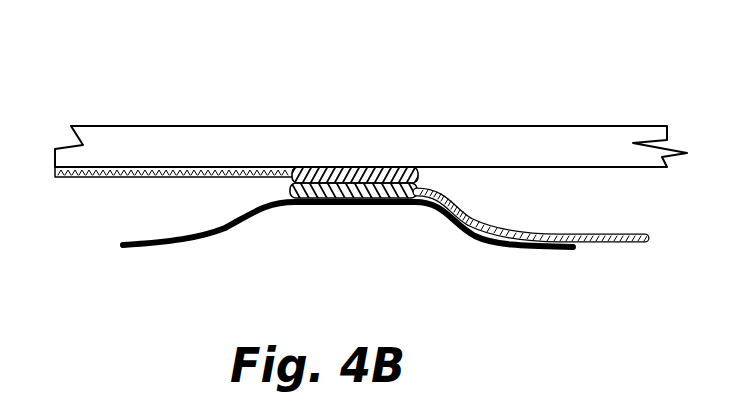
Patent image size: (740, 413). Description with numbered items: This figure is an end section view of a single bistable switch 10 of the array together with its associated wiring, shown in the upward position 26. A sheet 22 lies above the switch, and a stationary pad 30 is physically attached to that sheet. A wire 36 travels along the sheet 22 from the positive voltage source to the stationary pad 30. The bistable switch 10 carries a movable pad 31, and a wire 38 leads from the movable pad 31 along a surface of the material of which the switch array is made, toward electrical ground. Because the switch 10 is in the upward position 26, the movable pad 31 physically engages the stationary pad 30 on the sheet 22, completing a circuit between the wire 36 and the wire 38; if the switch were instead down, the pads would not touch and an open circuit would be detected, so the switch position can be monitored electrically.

The bistable switch 10 is at (377, 248).
The sheet 22 is at (570, 127).
The upward position 26 is at (253, 210).
The stationary pad 30 is at (342, 167).
The movable pad 31 is at (384, 183).
The wire 36 is at (125, 180).
The wire 38 is at (620, 245).